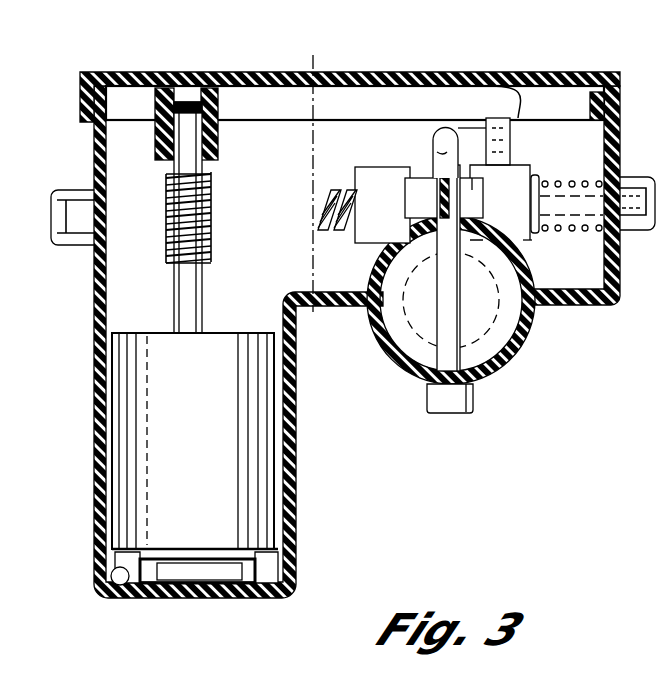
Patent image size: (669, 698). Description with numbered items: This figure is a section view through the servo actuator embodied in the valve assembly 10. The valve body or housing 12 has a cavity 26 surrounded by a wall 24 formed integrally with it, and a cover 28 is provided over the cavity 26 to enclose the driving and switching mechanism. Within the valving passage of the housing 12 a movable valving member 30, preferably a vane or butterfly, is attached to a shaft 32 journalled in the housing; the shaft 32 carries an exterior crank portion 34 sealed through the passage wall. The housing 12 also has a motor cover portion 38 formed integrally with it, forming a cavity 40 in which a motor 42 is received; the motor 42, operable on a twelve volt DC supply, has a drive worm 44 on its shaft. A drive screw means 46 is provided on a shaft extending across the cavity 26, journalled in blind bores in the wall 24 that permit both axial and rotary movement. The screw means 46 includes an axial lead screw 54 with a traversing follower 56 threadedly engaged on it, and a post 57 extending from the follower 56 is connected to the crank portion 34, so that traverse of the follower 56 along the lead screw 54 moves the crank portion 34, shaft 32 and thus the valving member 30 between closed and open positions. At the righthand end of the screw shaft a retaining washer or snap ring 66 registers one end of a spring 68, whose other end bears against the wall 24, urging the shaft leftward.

The valve assembly 10 is at (511, 372).
The valve body or housing 12 is at (95, 294).
The wall 24 is at (120, 150).
The cavity 26 is at (335, 296).
The cover 28 is at (100, 72).
The movable valving member 30 is at (490, 305).
The shaft 32 is at (436, 325).
The exterior crank portion 34 is at (457, 174).
The motor cover portion 38 is at (297, 497).
The cavity 40 is at (122, 585).
The motor 42 is at (147, 437).
The drive worm 44 is at (212, 200).
The drive screw means 46 is at (334, 241).
The axial lead screw 54 is at (337, 190).
The traversing follower 56 is at (523, 168).
The post 57 is at (486, 84).
The retaining washer or snap ring 66 is at (537, 175).
The spring 68 is at (572, 182).